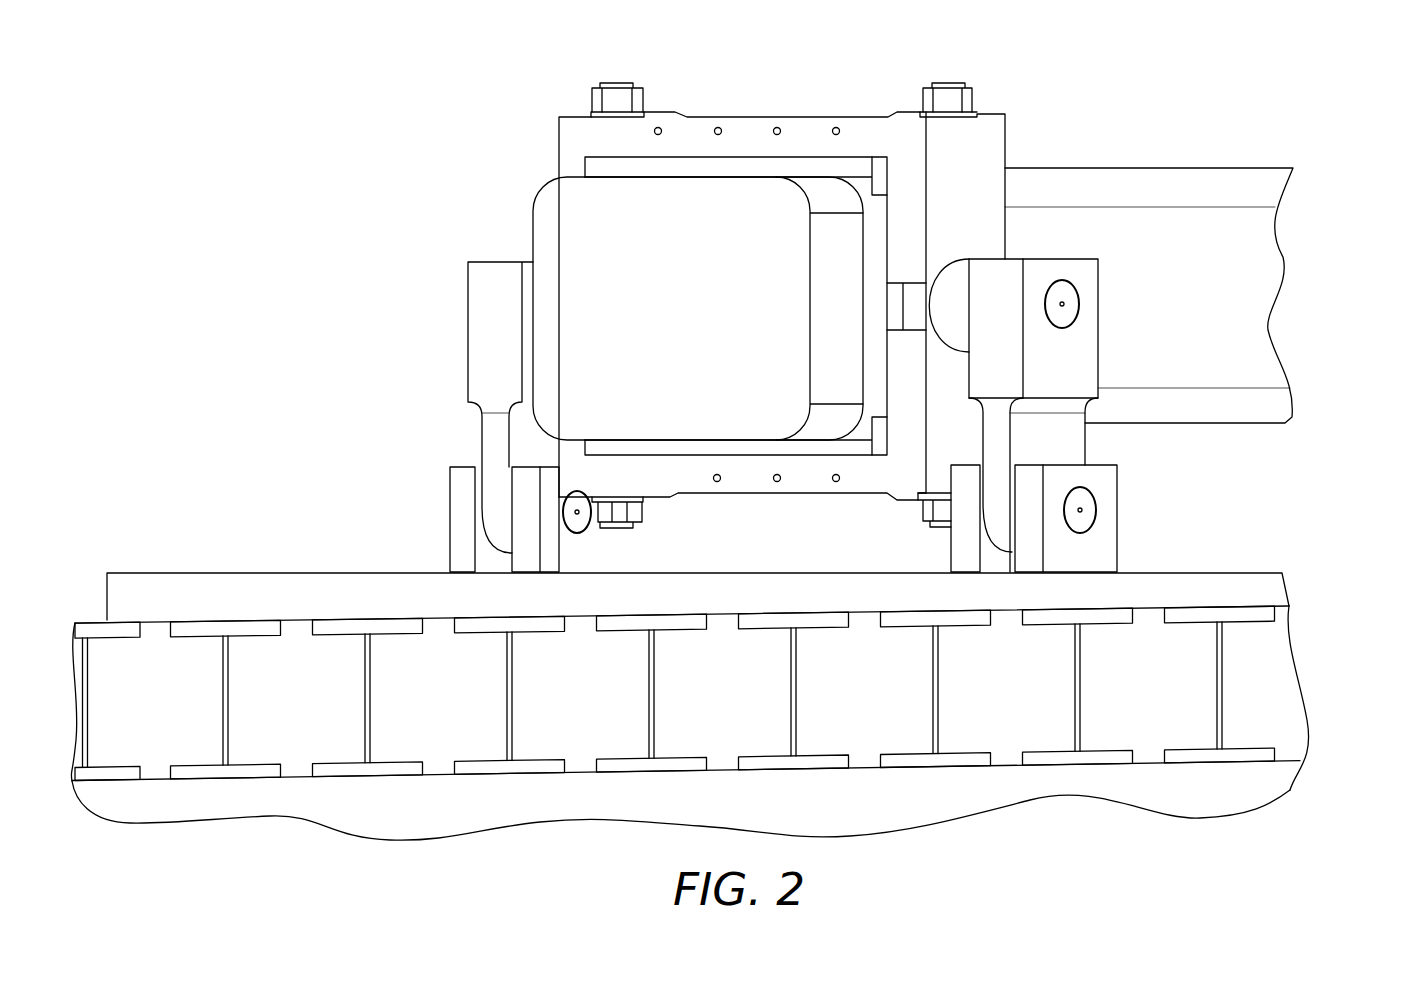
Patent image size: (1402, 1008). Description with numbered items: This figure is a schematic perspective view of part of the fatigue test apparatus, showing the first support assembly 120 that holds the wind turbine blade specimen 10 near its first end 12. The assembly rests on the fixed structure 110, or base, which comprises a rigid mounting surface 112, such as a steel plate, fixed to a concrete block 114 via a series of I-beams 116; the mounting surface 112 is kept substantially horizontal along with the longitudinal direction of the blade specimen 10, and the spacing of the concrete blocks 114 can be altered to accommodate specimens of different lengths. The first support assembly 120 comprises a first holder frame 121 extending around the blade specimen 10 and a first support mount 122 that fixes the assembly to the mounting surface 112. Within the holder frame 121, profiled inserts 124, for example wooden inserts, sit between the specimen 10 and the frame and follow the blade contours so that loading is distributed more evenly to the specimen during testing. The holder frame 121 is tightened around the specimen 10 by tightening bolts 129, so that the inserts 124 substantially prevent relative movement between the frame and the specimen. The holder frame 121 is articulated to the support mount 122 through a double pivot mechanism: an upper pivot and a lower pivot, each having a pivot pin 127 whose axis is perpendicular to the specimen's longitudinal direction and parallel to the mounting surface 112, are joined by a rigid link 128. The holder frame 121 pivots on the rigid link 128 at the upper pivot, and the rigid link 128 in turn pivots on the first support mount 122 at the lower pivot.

The wind turbine blade specimen 10 is at (1154, 164).
The first end 12 is at (555, 227).
The fixed structure 110 is at (1326, 711).
The mounting surface 112 is at (1280, 588).
The concrete block 114 is at (1282, 782).
The I-beam 116 is at (1222, 658).
The first support assembly 120 is at (776, 62).
The first holder frame 121 is at (808, 125).
The first support mount 122 is at (600, 552).
The profiled insert 124 is at (732, 167).
The pivot pin 127 is at (1078, 304).
The rigid link 128 is at (478, 345).
The tightening bolt 129 is at (618, 83).